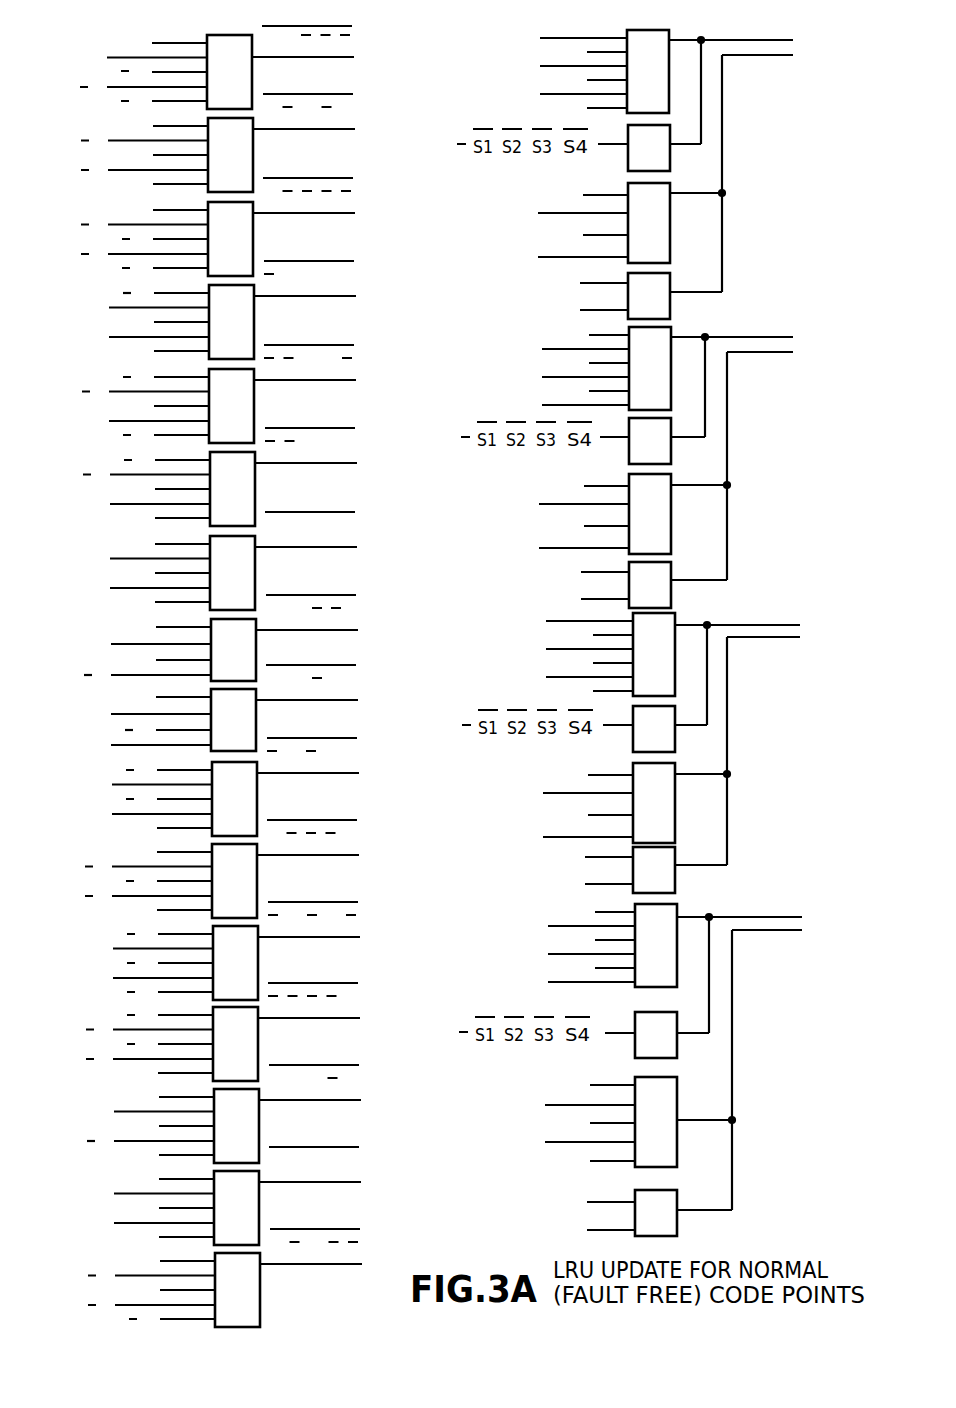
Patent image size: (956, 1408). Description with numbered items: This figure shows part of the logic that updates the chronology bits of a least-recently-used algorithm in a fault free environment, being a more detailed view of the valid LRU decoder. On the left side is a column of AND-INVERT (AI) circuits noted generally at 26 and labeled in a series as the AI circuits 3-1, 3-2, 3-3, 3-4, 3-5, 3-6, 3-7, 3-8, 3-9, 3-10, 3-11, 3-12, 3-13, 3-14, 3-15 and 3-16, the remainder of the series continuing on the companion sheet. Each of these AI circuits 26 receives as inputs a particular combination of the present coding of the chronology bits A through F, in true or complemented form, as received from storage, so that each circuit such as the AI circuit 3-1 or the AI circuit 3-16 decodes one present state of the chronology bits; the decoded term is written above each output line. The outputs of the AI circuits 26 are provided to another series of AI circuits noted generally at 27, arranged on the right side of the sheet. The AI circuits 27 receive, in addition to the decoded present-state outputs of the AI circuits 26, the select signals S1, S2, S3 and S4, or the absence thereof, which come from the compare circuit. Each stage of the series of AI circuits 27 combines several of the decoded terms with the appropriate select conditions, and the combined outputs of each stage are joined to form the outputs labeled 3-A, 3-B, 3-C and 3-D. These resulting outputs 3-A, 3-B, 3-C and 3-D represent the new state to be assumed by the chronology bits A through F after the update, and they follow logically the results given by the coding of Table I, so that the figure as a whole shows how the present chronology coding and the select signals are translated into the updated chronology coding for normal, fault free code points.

The AND-INVERT circuits 26 is at (245, 671).
The AND-INVERT circuits 27 is at (649, 624).
The AND-INVERT circuit 3-1 is at (217, 70).
The AND-INVERT circuit 3-2 is at (218, 146).
The AND-INVERT circuit 3-3 is at (218, 230).
The AND-INVERT circuit 3-4 is at (226, 313).
The AND-INVERT circuit 3-5 is at (219, 397).
The AND-INVERT circuit 3-6 is at (220, 480).
The AND-INVERT circuit 3-7 is at (227, 564).
The AND-INVERT circuit 3-8 is at (221, 642).
The AND-INVERT circuit 3-9 is at (228, 712).
The AND-INVERT circuit 3-10 is at (229, 790).
The AND-INVERT circuit 3-11 is at (222, 872).
The AND-INVERT circuit 3-12 is at (230, 954).
The AND-INVERT circuit 3-13 is at (223, 1035).
The AND-INVERT circuit 3-14 is at (224, 1117).
The AND-INVERT circuit 3-15 is at (231, 1199).
The AND-INVERT circuit 3-16 is at (225, 1281).
The output of AI circuits 3-A is at (645, 174).
The output of AI circuits 3-B is at (647, 467).
The output of AI circuits 3-C is at (651, 753).
The output of AI circuits 3-D is at (650, 1071).